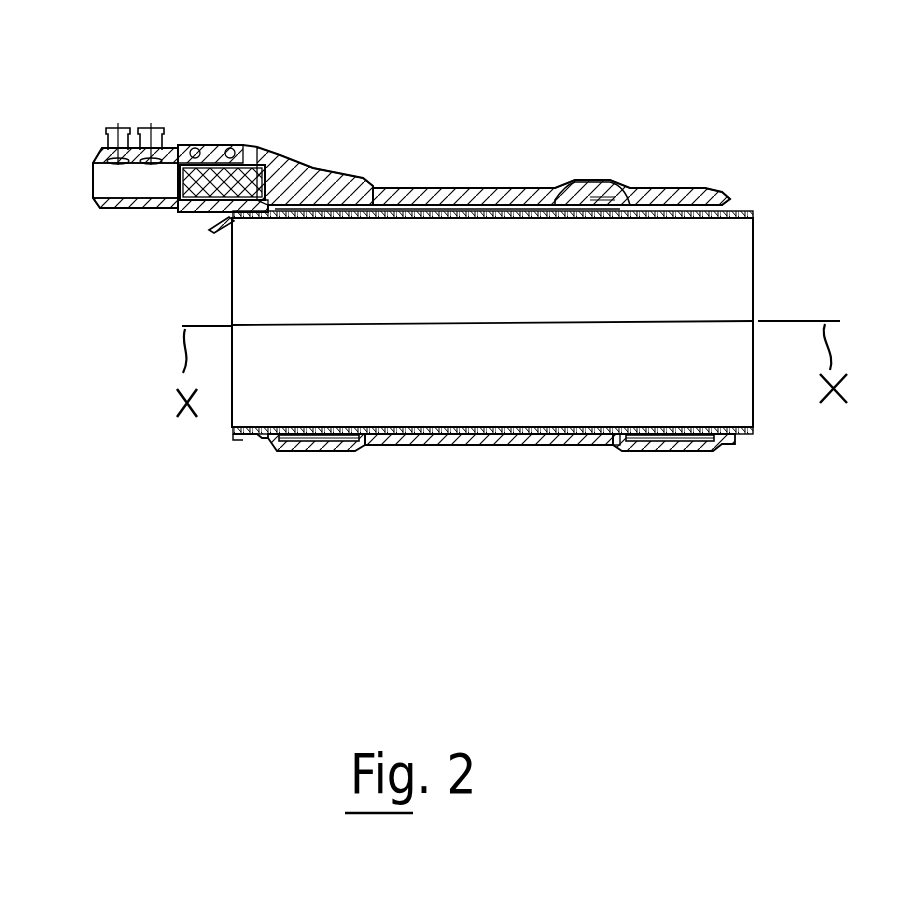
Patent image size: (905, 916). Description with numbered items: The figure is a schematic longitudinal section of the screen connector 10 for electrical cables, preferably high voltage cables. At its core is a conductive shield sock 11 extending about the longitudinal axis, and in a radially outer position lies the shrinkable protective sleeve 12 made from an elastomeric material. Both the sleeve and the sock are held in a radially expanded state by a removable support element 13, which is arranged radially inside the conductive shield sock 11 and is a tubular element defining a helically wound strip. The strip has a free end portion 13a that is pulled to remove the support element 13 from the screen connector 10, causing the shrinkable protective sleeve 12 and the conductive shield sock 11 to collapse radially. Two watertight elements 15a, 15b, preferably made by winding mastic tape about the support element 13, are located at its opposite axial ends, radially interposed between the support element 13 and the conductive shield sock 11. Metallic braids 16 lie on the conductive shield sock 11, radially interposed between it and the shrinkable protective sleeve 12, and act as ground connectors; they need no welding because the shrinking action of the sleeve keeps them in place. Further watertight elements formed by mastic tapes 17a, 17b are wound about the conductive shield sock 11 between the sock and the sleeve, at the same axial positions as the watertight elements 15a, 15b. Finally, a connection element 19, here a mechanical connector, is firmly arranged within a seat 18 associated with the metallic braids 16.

The screen connector 10 is at (666, 574).
The conductive shield sock 11 is at (520, 208).
The shrinkable protective sleeve 12 is at (472, 206).
The support element 13 is at (240, 432).
The free end portion 13a is at (228, 223).
The watertight element 15a is at (328, 432).
The watertight element 15b is at (675, 430).
The metallic braid 16 is at (430, 211).
The mastic tape 17a is at (330, 440).
The mastic tape 17b is at (683, 440).
The seat 18 is at (226, 148).
The connection element 19 is at (102, 180).